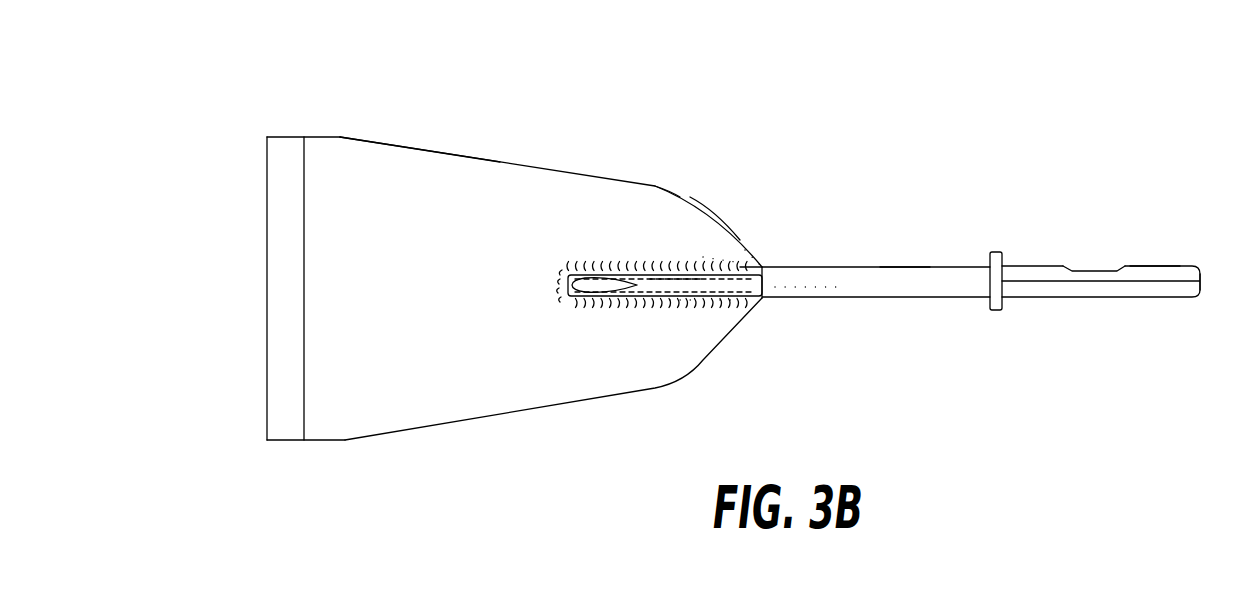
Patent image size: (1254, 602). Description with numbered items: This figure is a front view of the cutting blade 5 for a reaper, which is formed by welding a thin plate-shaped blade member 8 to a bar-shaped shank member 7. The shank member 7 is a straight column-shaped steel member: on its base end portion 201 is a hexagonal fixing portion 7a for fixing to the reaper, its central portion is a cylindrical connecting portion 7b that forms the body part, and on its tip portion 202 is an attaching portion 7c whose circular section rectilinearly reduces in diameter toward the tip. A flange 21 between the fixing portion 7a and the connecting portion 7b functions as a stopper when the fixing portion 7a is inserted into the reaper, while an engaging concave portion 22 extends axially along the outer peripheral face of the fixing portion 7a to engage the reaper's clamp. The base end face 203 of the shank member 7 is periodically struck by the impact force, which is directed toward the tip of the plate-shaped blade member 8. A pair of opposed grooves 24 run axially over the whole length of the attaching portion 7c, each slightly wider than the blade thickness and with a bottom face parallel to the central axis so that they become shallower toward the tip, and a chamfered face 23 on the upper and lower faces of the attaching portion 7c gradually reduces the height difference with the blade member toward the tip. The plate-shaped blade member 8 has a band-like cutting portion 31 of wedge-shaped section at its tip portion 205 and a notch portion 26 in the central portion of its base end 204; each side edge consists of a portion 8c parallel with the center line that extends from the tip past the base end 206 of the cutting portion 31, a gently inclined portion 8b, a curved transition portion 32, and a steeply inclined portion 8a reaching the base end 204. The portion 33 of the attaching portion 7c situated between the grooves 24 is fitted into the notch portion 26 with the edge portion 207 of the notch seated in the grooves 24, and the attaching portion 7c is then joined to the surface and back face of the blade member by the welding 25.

The cutting blade 5 is at (912, 82).
The shank member 7 is at (945, 265).
The fixing portion 7a is at (1148, 265).
The connecting portion 7b is at (903, 265).
The attaching portion 7c is at (635, 272).
The plate-shaped blade member 8 is at (463, 152).
The steeply inclined side edge portion 8a is at (718, 222).
The gently inclined side edge portion 8b is at (413, 148).
The parallel side edge portion 8c is at (322, 137).
The flange 21 is at (995, 252).
The engaging concave portion 22 is at (1090, 268).
The chamfered face 23 is at (587, 280).
The grooves 24 is at (732, 312).
The welding 25 is at (668, 267).
The notch portion 26 is at (680, 312).
The cutting portion 31 is at (285, 147).
The curved transition portion 32 is at (673, 188).
The portion situated between the grooves 33 is at (703, 257).
The base end portion 201 is at (1122, 218).
The tip portion 202 is at (683, 250).
The base end face 203 is at (1200, 280).
The base end 204 is at (773, 283).
The tip portion 205 is at (307, 452).
The base end of the cutting portion 206 is at (305, 137).
The edge portion 207 is at (745, 250).